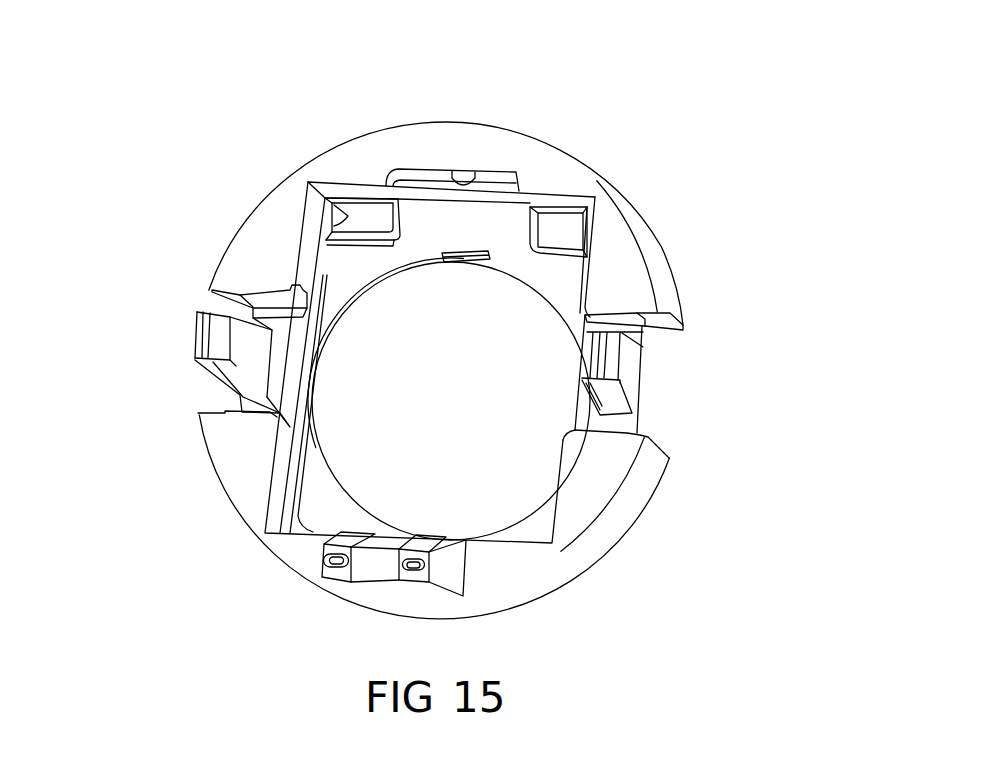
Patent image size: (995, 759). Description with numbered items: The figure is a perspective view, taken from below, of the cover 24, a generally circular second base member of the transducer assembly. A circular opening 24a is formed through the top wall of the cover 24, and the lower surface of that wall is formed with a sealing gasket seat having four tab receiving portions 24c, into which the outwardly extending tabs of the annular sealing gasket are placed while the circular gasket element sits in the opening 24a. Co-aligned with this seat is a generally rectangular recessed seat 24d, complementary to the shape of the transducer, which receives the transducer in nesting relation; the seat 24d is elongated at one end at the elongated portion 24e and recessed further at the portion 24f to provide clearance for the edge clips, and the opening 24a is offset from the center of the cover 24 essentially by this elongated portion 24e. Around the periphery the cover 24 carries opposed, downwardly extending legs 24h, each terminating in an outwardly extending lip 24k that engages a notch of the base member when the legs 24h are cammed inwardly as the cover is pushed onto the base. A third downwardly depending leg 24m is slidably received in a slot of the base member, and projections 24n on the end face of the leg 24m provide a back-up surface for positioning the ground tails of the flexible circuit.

The cover 24 is at (655, 218).
The circular opening 24a is at (320, 443).
The tab receiving portions 24c is at (547, 263).
The rectangular recessed seat 24d is at (300, 512).
The elongated portion 24e is at (348, 215).
The further recessed portion 24f is at (470, 185).
The legs 24h is at (242, 342).
The lip 24k is at (198, 362).
The third leg 24m is at (393, 600).
The projections 24n is at (410, 562).